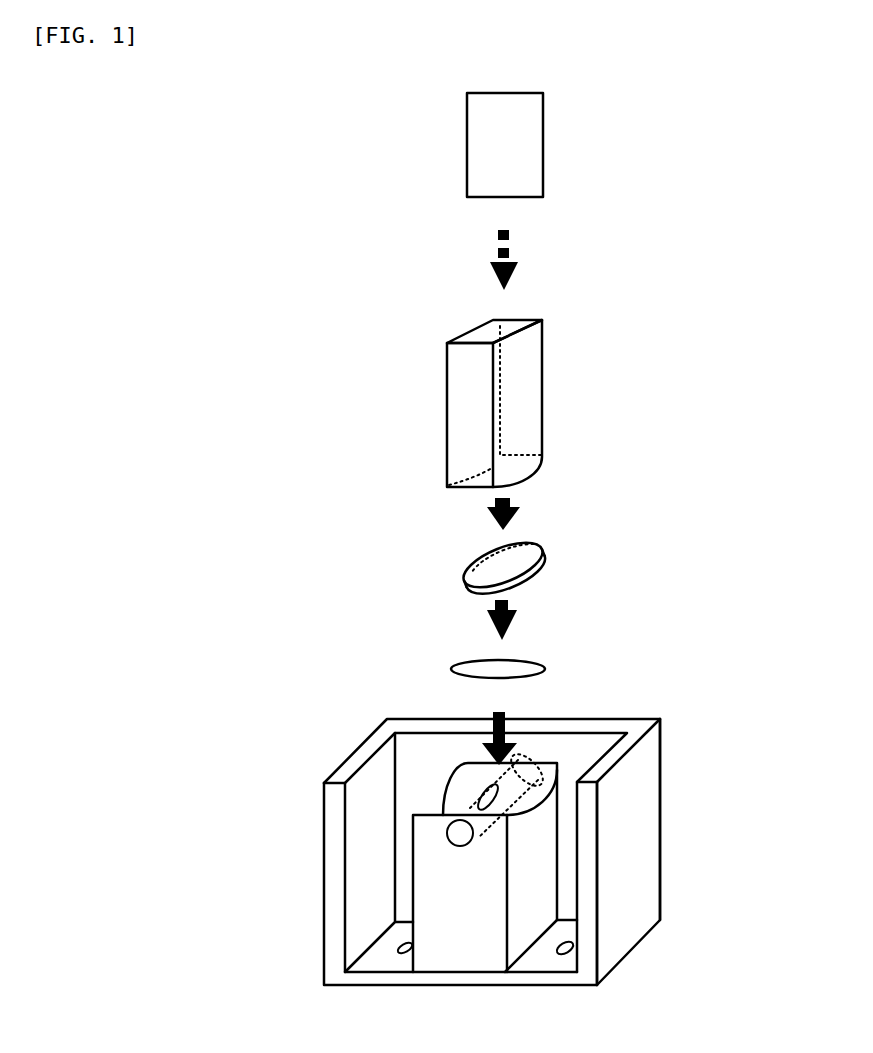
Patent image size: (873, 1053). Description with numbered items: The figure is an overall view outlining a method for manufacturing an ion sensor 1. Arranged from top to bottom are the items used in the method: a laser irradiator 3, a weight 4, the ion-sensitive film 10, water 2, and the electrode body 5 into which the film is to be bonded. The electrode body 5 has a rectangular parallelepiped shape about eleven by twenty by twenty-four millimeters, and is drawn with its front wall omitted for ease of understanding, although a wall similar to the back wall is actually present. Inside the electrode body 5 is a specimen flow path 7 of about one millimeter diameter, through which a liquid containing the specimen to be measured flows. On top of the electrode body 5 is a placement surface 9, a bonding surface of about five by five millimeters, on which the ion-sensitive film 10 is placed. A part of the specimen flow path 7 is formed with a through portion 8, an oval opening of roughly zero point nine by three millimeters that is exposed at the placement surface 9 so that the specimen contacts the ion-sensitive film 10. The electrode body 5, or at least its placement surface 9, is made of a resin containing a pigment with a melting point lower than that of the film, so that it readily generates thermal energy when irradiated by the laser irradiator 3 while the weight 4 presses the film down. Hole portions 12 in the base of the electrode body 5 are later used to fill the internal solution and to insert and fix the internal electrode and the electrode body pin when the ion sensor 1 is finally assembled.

The ion sensor 1 is at (353, 755).
The water 2 is at (513, 672).
The laser irradiator 3 is at (522, 147).
The weight 4 is at (512, 407).
The electrode body 5 is at (643, 818).
The specimen flow path 7 is at (447, 833).
The through portion 8 is at (513, 817).
The placement surface 9 is at (500, 800).
The ion-sensitive film 10 is at (480, 556).
The hole portions 12 is at (397, 946).